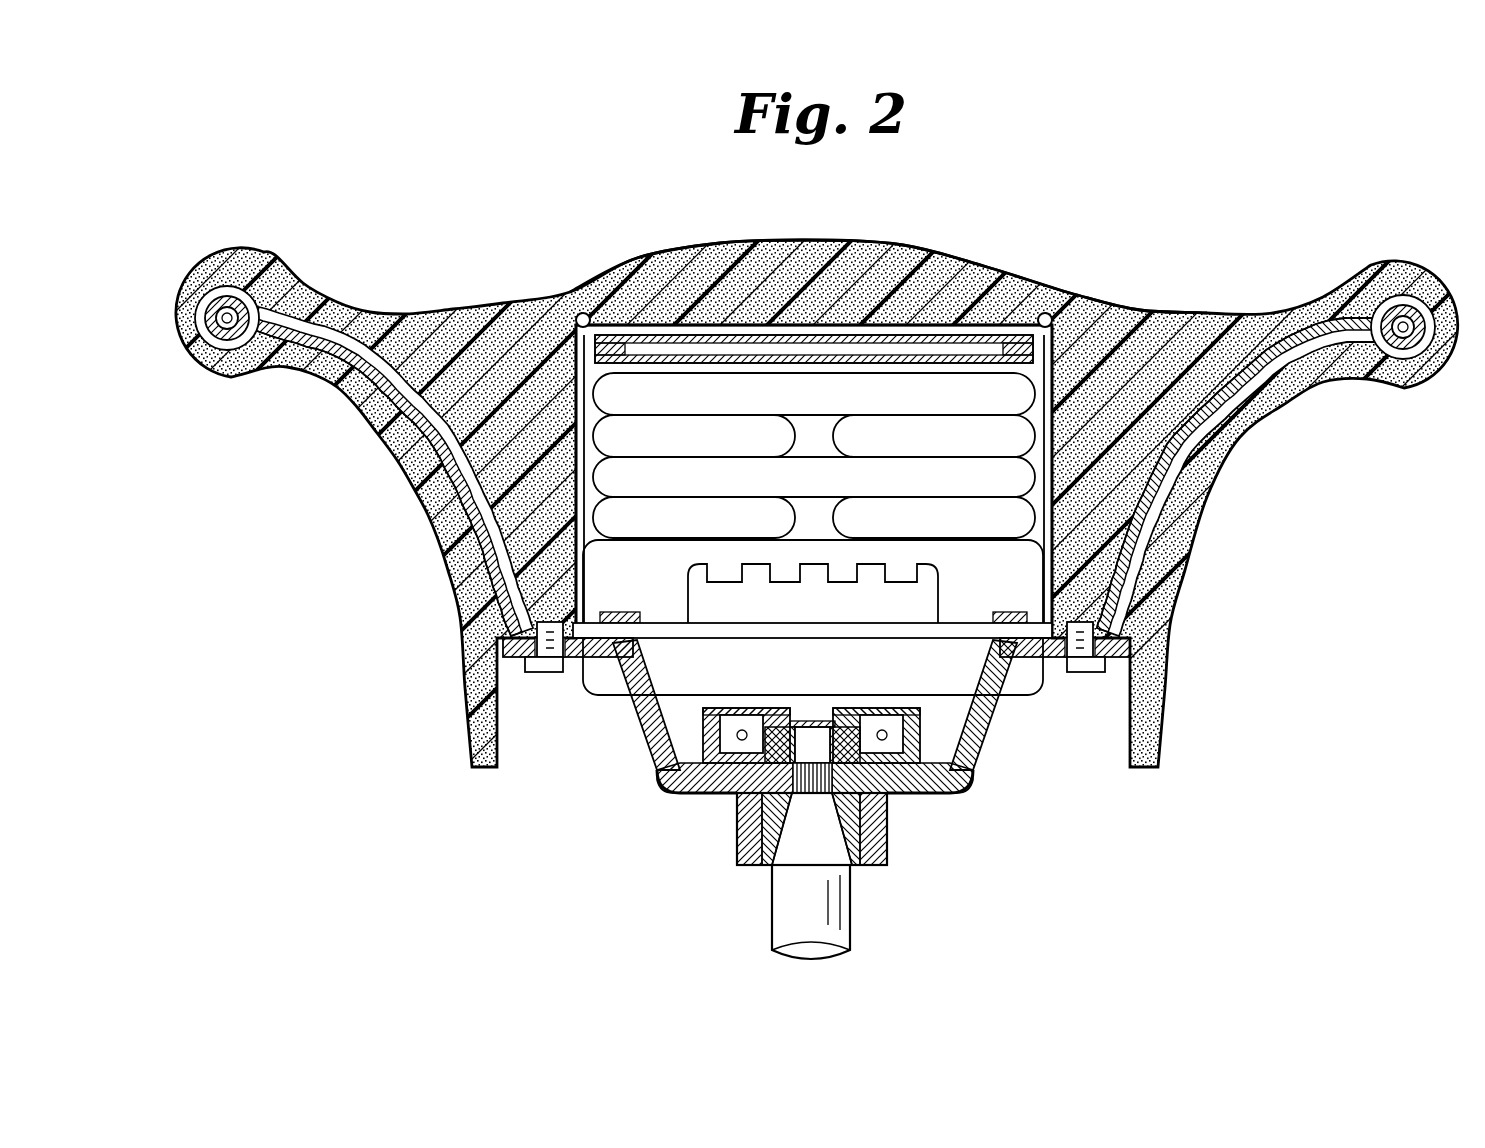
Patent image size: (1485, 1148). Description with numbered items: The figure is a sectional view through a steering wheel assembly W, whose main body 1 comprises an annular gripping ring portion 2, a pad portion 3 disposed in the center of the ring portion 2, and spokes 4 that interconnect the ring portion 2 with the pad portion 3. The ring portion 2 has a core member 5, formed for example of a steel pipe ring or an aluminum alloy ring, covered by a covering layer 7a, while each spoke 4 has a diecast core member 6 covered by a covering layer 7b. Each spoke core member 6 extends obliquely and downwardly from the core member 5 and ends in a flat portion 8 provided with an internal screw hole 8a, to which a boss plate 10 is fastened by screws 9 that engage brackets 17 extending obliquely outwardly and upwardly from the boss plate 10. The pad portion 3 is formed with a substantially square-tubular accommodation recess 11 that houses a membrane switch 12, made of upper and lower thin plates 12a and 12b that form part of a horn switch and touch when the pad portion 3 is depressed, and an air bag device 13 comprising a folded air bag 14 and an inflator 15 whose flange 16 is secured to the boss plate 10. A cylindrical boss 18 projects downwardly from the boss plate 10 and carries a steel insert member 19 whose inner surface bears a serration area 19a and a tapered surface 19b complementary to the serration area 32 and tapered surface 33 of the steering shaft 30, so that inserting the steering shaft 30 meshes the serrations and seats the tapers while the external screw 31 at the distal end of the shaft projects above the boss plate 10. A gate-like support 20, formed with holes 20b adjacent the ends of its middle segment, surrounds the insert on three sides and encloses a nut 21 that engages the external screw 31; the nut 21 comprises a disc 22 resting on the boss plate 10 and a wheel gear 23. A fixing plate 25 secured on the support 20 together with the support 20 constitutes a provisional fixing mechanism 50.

The main body 1 is at (420, 303).
The annular gripping ring portion 2 is at (218, 389).
The pad portion 3 is at (938, 243).
The spoke 4 is at (815, 471).
The core member 5 is at (225, 330).
The core member 6 is at (455, 478).
The covering layer 7a is at (245, 360).
The covering layer 7b is at (470, 540).
The flat portion 8 is at (508, 625).
The internal screw hole 8a is at (543, 625).
The screw 9 is at (560, 674).
The boss plate 10 is at (945, 792).
The accommodation recess 11 is at (578, 345).
The membrane switch 12 is at (814, 307).
The upper thin plate 12a is at (800, 338).
The lower thin plate 12b is at (812, 363).
The air bag device 13 is at (1070, 395).
The air bag 14 is at (890, 447).
The inflator 15 is at (940, 588).
The flange 16 is at (963, 640).
The bracket 17 is at (628, 678).
The cylindrical boss 18 is at (889, 840).
The insert member 19 is at (816, 852).
The serration area 19a is at (832, 775).
The tapered surface 19b is at (785, 853).
The support 20 is at (693, 704).
The hole 20b is at (737, 740).
The nut 21 is at (770, 721).
The disc 22 is at (730, 760).
The wheel gear 23 is at (868, 712).
The fixing plate 25 is at (718, 708).
The steering shaft 30 is at (852, 935).
The external screw 31 is at (812, 727).
The serration area 32 is at (780, 770).
The tapered surface 33 is at (790, 823).
The provisional fixing mechanism 50 is at (815, 739).
The steering wheel assembly W is at (1096, 268).